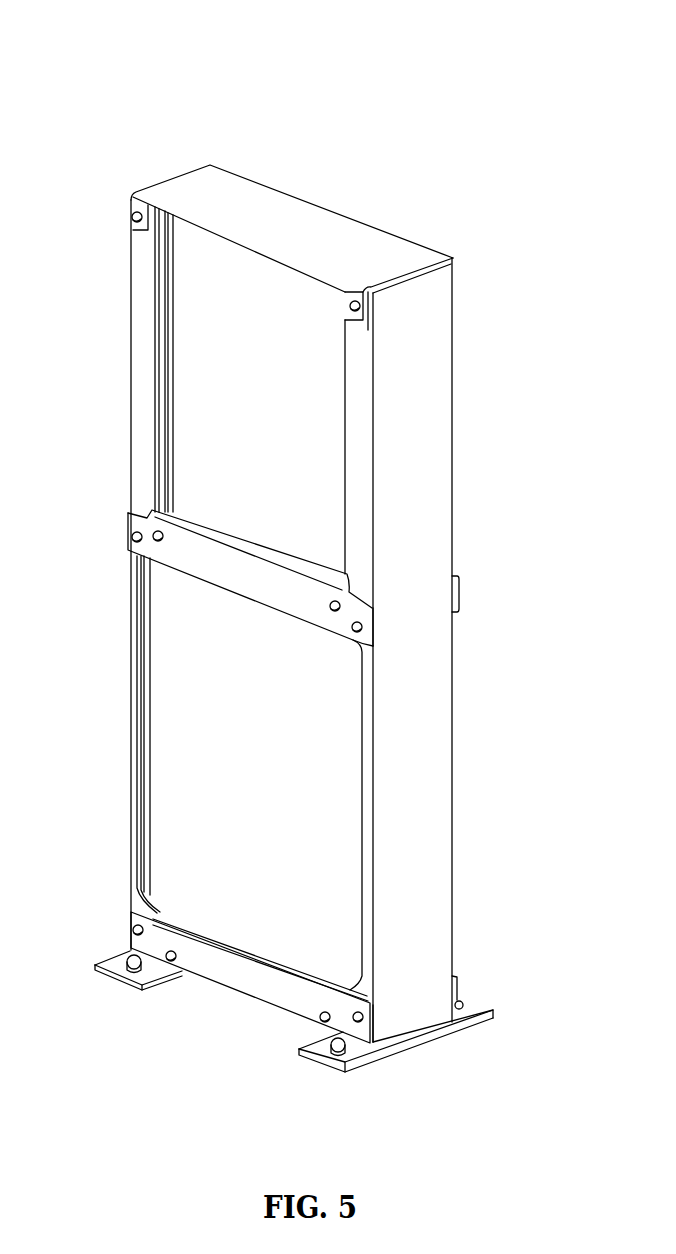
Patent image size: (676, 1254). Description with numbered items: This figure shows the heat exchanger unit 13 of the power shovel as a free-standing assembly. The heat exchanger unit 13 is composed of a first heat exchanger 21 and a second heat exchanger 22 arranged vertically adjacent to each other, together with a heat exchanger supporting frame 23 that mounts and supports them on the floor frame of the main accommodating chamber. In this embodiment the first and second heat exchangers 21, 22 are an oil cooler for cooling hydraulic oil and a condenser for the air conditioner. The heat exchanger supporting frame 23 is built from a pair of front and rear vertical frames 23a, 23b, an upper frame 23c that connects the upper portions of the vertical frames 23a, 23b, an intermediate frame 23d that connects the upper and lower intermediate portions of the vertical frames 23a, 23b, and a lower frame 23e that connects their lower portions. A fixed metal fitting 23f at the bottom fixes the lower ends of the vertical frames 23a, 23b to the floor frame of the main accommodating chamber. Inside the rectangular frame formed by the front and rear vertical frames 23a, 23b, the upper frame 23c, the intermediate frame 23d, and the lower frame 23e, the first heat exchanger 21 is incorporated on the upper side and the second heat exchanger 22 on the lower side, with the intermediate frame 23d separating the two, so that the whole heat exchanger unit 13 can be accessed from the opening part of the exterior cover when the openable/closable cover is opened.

The heat exchanger unit 13 is at (160, 116).
The first heat exchanger 21 is at (200, 367).
The second heat exchanger 22 is at (200, 770).
The heat exchanger supporting frame 23 is at (437, 348).
The front vertical frame 23a is at (418, 430).
The rear vertical frame 23b is at (137, 645).
The upper frame 23c is at (318, 220).
The intermediate frame 23d is at (245, 570).
The lower frame 23e is at (233, 985).
The fixed metal fitting 23f is at (98, 970).